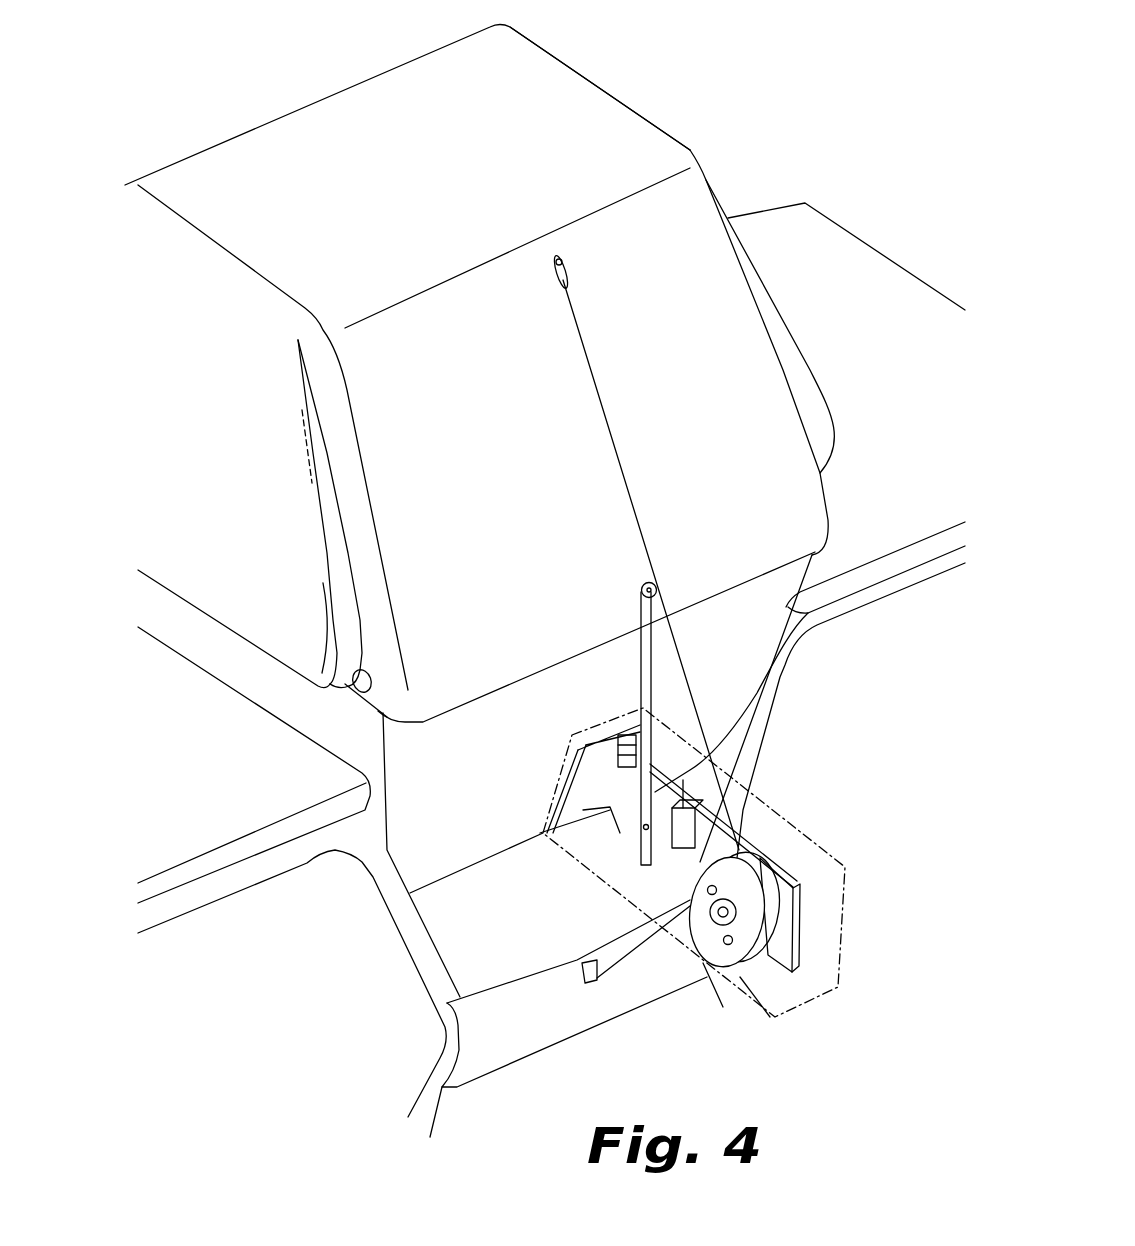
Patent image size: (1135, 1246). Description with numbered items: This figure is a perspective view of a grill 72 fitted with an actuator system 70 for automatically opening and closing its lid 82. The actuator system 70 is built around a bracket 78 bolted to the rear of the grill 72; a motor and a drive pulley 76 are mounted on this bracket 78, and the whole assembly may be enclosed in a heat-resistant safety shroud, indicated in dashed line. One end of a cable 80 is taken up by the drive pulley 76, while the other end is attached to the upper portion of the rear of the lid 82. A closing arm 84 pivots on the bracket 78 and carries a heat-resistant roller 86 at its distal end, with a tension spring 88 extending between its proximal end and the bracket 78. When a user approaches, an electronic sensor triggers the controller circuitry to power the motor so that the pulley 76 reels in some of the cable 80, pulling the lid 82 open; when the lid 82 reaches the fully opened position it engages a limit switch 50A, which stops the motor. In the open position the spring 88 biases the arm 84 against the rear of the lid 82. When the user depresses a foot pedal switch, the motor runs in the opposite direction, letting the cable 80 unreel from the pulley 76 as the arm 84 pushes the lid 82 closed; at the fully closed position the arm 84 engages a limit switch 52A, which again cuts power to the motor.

The grill 72 is at (252, 113).
The lid 82 is at (605, 88).
The cable 80 is at (617, 437).
The heat-resistant roller 86 is at (645, 582).
The closing arm 84 is at (638, 672).
The actuator system 70 is at (843, 820).
The bracket 78 is at (610, 810).
The limit switch 52A is at (615, 733).
The limit switch 50A is at (650, 783).
The tension spring 88 is at (640, 893).
The drive pulley 76 is at (743, 945).